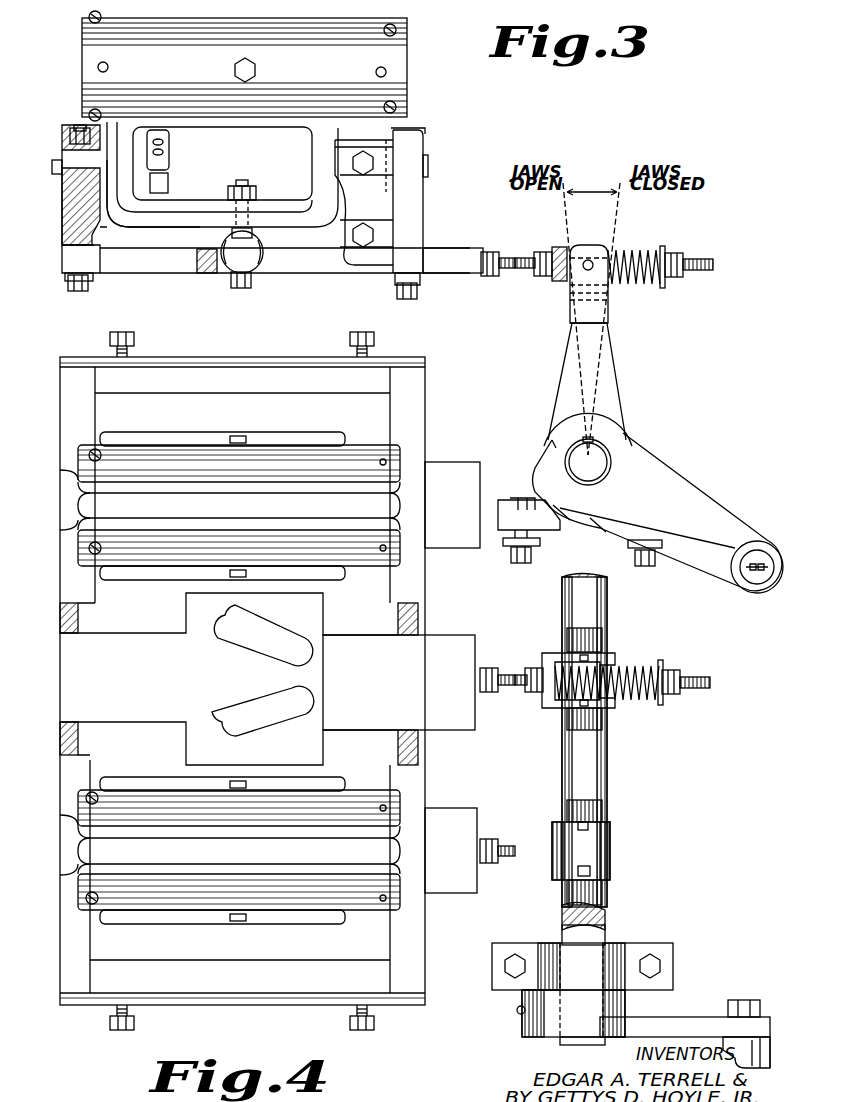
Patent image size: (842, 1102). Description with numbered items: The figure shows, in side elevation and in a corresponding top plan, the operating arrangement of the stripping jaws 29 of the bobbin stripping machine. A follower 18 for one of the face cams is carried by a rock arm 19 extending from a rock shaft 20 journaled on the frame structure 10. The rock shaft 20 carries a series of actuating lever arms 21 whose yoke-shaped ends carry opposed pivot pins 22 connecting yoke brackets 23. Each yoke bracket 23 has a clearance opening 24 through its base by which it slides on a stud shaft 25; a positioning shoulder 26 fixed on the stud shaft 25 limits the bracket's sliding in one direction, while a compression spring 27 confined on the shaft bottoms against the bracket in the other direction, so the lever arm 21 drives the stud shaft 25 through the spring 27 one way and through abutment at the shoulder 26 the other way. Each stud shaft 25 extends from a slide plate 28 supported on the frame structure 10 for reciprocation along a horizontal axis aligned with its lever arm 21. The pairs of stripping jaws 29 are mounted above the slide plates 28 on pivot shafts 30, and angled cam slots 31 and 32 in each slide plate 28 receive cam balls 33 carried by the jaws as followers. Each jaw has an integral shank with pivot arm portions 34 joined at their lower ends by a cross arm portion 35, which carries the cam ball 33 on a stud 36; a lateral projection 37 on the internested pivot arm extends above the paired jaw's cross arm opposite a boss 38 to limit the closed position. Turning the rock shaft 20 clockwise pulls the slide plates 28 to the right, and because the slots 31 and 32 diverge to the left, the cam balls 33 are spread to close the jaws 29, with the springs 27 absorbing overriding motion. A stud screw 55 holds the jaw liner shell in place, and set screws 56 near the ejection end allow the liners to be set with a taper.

In FIG. 3, the frame structure 10 is at (54, 233).
In FIG. 4, the frame structure 10 is at (55, 395).
In FIG. 3, the follower 18 is at (748, 548).
In FIG. 4, the follower 18 is at (750, 1025).
In FIG. 3, the rock arm 19 is at (692, 488).
In FIG. 4, the rock arm 19 is at (690, 1017).
In FIG. 3, the rock shaft 20 is at (600, 460).
In FIG. 4, the rock shaft 20 is at (605, 910).
In FIG. 3, the actuating lever arm 21 is at (620, 370).
In FIG. 4, the actuating lever arm 21 is at (600, 640).
In FIG. 3, the pivot pin 22 is at (590, 260).
In FIG. 4, the pivot pin 22 is at (585, 872).
In FIG. 3, the yoke bracket 23 is at (553, 246).
In FIG. 4, the yoke bracket 23 is at (548, 656).
In FIG. 3, the clearance opening 24 is at (550, 282).
In FIG. 3, the stud shaft 25 is at (496, 254).
In FIG. 4, the stud shaft 25 is at (496, 696).
In FIG. 3, the positioning shoulder 26 is at (532, 272).
In FIG. 4, the positioning shoulder 26 is at (536, 698).
In FIG. 3, the compression spring 27 is at (628, 283).
In FIG. 4, the compression spring 27 is at (624, 702).
In FIG. 3, the slide plate 28 is at (450, 250).
In FIG. 4, the slide plate 28 is at (450, 462).
In FIG. 3, the stripping jaw 29 is at (82, 60).
In FIG. 4, the stripping jaw 29 is at (80, 467).
In FIG. 3, the pivot shaft 30 is at (62, 148).
In FIG. 4, the cam slot 31 is at (245, 648).
In FIG. 3, the cam slot 32 is at (230, 272).
In FIG. 4, the cam slot 32 is at (253, 700).
In FIG. 3, the cam ball 33 is at (264, 268).
In FIG. 3, the pivot arm portion 34 is at (117, 135).
In FIG. 3, the cross arm portion 35 is at (196, 225).
In FIG. 3, the stud 36 is at (246, 290).
In FIG. 3, the lateral projection 37 is at (166, 150).
In FIG. 3, the boss 38 is at (158, 205).
In FIG. 3, the stud screw 55 is at (245, 58).
In FIG. 3, the set screw 56 is at (89, 17).